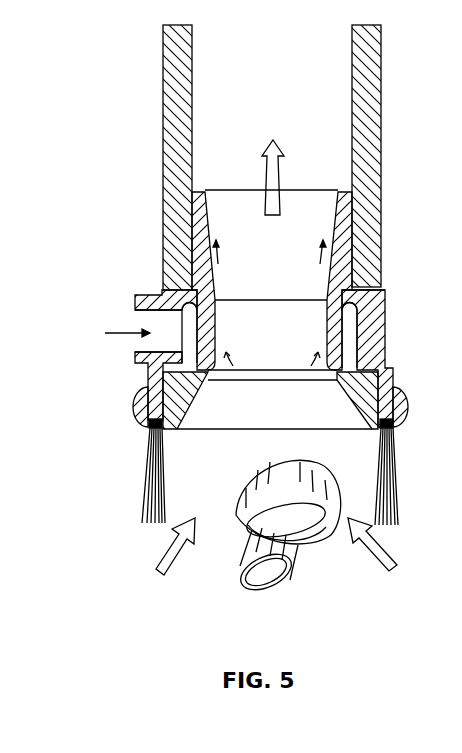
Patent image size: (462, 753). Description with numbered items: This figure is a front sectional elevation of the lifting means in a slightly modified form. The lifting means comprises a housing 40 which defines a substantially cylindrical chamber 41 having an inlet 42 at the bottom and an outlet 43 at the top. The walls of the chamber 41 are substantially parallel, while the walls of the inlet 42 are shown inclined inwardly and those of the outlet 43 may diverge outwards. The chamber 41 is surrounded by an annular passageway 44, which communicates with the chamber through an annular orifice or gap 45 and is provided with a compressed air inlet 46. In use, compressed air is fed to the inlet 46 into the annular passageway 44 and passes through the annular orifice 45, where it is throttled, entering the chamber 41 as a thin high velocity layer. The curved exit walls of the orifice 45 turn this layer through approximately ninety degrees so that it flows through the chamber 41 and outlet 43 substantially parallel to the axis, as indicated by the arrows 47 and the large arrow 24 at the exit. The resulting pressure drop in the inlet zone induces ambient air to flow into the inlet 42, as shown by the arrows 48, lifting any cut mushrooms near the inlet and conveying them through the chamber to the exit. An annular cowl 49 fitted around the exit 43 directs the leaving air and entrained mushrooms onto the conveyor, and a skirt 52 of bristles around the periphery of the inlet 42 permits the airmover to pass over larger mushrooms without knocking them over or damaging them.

The outlet air flow arrow 24 is at (278, 174).
The housing 40 is at (386, 339).
The cylindrical chamber 41 is at (384, 294).
The inlet 42 is at (323, 395).
The outlet 43 is at (323, 208).
The annular passageway 44 is at (353, 318).
The annular orifice 45 is at (340, 371).
The compressed air inlet 46 is at (150, 319).
The arrows 47 is at (316, 258).
The arrows 48 is at (162, 560).
The annular cowl 49 is at (378, 99).
The skirt 52 is at (397, 481).